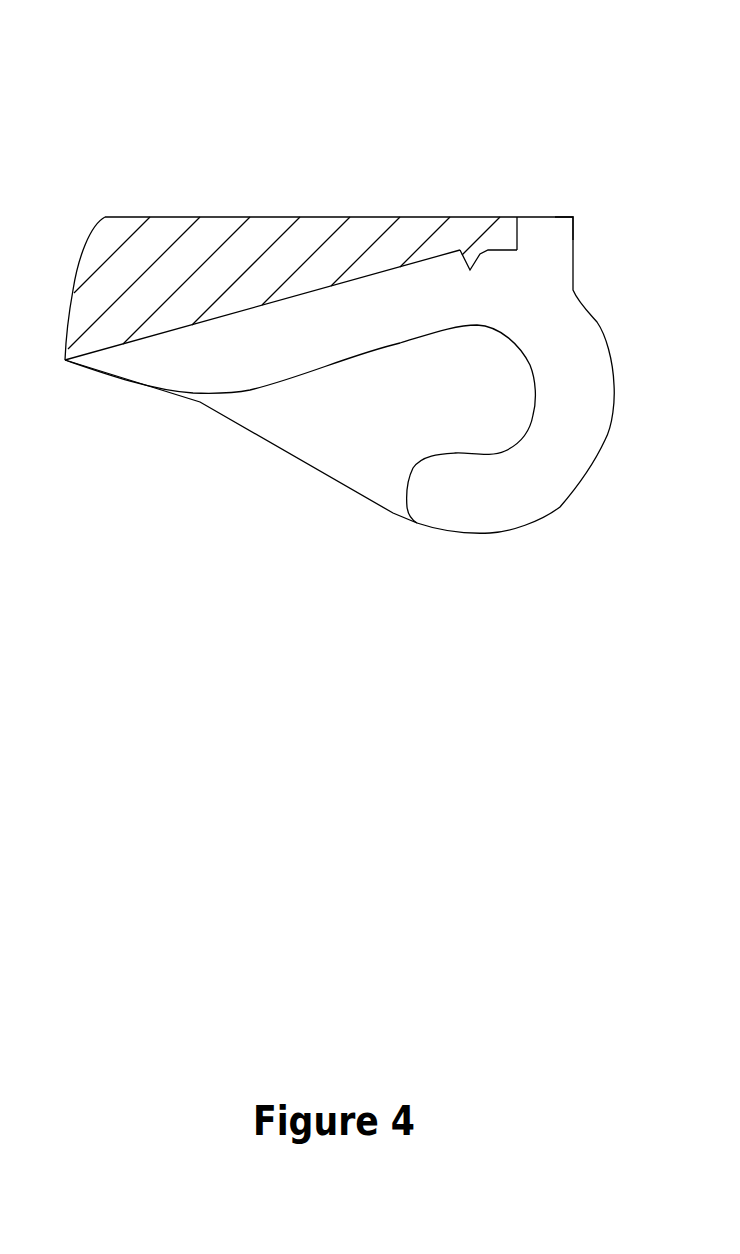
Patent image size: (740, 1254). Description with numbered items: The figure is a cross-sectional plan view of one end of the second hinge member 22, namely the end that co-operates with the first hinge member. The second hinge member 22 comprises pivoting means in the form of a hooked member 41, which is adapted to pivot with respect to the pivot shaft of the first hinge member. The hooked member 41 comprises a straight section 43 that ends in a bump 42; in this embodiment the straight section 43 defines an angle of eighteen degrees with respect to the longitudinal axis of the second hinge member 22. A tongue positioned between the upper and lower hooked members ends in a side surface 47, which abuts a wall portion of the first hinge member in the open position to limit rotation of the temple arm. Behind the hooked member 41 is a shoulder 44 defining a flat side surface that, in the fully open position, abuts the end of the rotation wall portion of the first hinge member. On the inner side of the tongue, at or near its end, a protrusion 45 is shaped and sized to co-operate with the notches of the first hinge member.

The second hinge member 22 is at (150, 226).
The hooked member 41 is at (541, 463).
The bump 42 is at (199, 403).
The straight section 43 is at (318, 346).
The shoulder 44 is at (576, 221).
The protrusion 45 is at (463, 249).
The side surface 47 is at (519, 224).